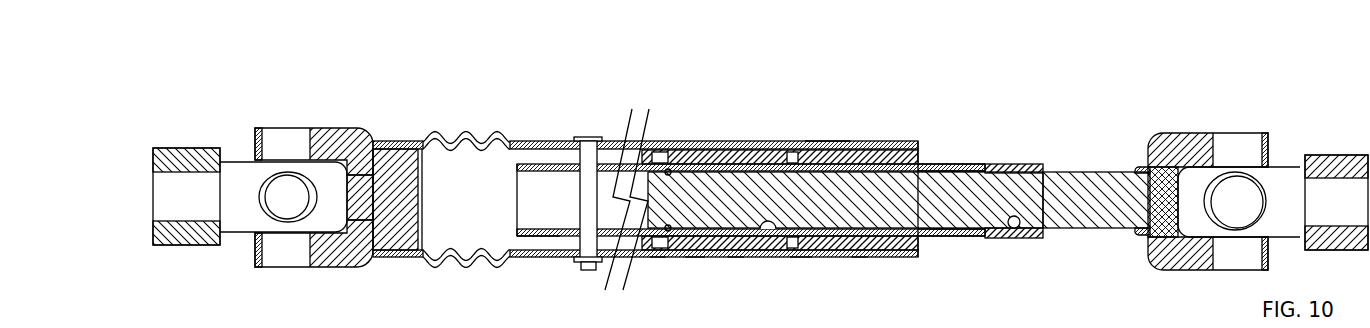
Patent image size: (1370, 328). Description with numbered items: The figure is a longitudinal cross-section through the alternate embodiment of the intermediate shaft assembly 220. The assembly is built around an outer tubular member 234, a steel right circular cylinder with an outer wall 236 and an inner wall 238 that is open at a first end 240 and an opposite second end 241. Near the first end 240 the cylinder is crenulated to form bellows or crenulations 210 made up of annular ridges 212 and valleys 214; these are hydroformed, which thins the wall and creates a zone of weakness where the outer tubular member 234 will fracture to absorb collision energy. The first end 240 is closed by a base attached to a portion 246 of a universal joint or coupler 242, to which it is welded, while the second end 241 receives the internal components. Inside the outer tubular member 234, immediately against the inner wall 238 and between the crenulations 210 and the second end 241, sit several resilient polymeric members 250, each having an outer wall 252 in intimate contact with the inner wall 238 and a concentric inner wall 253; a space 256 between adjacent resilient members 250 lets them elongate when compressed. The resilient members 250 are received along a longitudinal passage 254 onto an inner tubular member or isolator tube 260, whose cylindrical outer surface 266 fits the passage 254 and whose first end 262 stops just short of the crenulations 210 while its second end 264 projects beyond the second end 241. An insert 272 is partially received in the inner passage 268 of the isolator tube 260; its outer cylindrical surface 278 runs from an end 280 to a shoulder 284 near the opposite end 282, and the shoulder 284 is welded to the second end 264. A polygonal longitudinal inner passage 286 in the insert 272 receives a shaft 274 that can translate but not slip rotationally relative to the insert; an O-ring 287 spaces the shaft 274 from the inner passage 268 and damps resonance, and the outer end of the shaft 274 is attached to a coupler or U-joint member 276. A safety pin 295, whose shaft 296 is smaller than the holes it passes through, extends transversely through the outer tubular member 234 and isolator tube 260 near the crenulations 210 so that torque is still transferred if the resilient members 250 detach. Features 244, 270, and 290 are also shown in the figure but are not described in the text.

The crenulations 210 is at (857, 181).
The annular ridges 212 is at (432, 263).
The valleys 214 is at (485, 258).
The intermediate shaft assembly 220 is at (841, 181).
The outer tubular member 234 is at (658, 136).
The outer wall 236 is at (690, 146).
The inner wall 238 is at (762, 147).
The first end 240 is at (370, 140).
The second end 241 is at (918, 146).
The universal joint 242 is at (242, 130).
The clevis arm 244 is at (327, 137).
The portion of universal joint 246 is at (397, 163).
The resilient members 250 is at (658, 258).
The outer wall 252 is at (801, 259).
The inner wall 253 is at (773, 231).
The longitudinal passage 254 is at (935, 171).
The space 256 is at (792, 152).
The inner tubular member 260 is at (517, 163).
The first end 262 is at (378, 258).
The second end 264 is at (983, 238).
The cylindrical outer surface 266 is at (523, 235).
The inner passage 268 is at (519, 224).
The rod end assembly 270 is at (1069, 198).
The insert 272 is at (1033, 165).
The shaft 274 is at (1097, 177).
The U-joint member 276 is at (1208, 122).
The outer cylindrical surface 278 is at (937, 245).
The end of insert 280 is at (827, 142).
The second end 282 is at (1047, 238).
The shoulder 284 is at (973, 165).
The longitudinal inner passage 286 is at (1015, 229).
The O-ring 287 is at (696, 258).
The flange 290 is at (1148, 246).
The pin 295 is at (587, 164).
The shaft of pin 296 is at (587, 175).